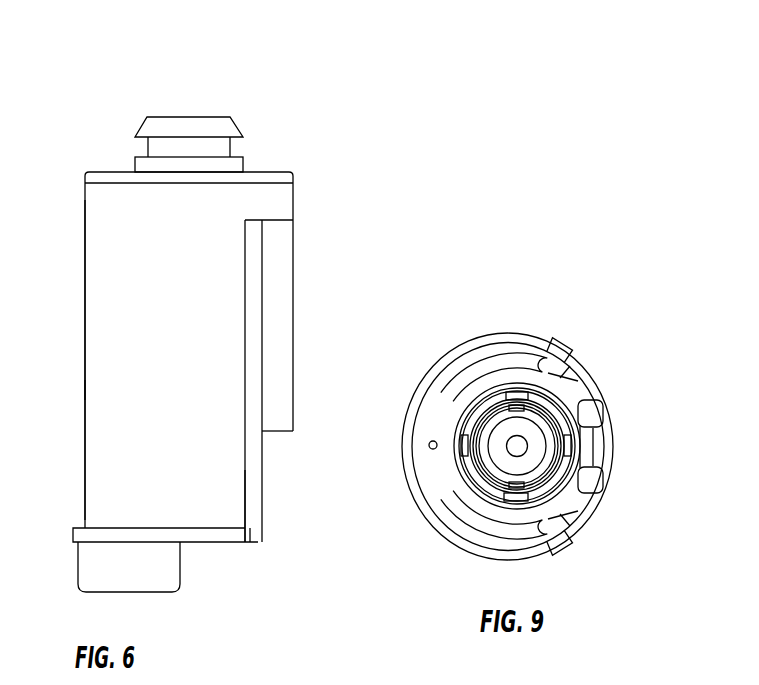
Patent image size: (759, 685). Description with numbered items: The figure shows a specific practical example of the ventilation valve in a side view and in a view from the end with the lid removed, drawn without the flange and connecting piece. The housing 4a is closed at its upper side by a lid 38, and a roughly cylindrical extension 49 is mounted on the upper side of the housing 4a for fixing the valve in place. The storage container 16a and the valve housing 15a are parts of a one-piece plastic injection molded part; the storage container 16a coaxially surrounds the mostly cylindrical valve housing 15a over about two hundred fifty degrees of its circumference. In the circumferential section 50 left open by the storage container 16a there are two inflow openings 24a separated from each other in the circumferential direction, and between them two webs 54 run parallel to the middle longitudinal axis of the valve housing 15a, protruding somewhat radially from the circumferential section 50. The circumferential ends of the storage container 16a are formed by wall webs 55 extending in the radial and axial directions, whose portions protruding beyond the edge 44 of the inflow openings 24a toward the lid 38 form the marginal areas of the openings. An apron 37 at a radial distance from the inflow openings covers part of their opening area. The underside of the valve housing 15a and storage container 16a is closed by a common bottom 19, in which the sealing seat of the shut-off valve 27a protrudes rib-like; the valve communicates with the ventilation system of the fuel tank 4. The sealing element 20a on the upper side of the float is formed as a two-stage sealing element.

In FIG. 9, the fuel tank 4 is at (396, 410).
In FIG. 6, the housing 4a is at (82, 387).
In FIG. 6, the valve housing 15a is at (252, 510).
In FIG. 9, the valve housing 15a is at (470, 398).
In FIG. 6, the storage container 16a is at (108, 280).
In FIG. 9, the storage container 16a is at (472, 516).
In FIG. 6, the bottom 19 is at (204, 536).
In FIG. 9, the sealing element 20a is at (505, 402).
In FIG. 9, the inflow openings 24a is at (574, 401).
In FIG. 6, the shut-off valve 27a is at (92, 567).
In FIG. 6, the apron 37 is at (281, 197).
In FIG. 9, the apron 37 is at (607, 449).
In FIG. 6, the lid 38 is at (100, 180).
In FIG. 9, the lower edge 44 is at (575, 473).
In FIG. 6, the cylindrical extension 49 is at (214, 135).
In FIG. 6, the circumferential section 50 is at (250, 345).
In FIG. 9, the circumferential section 50 is at (600, 397).
In FIG. 6, the webs 54 is at (274, 272).
In FIG. 9, the wall webs 55 is at (553, 372).